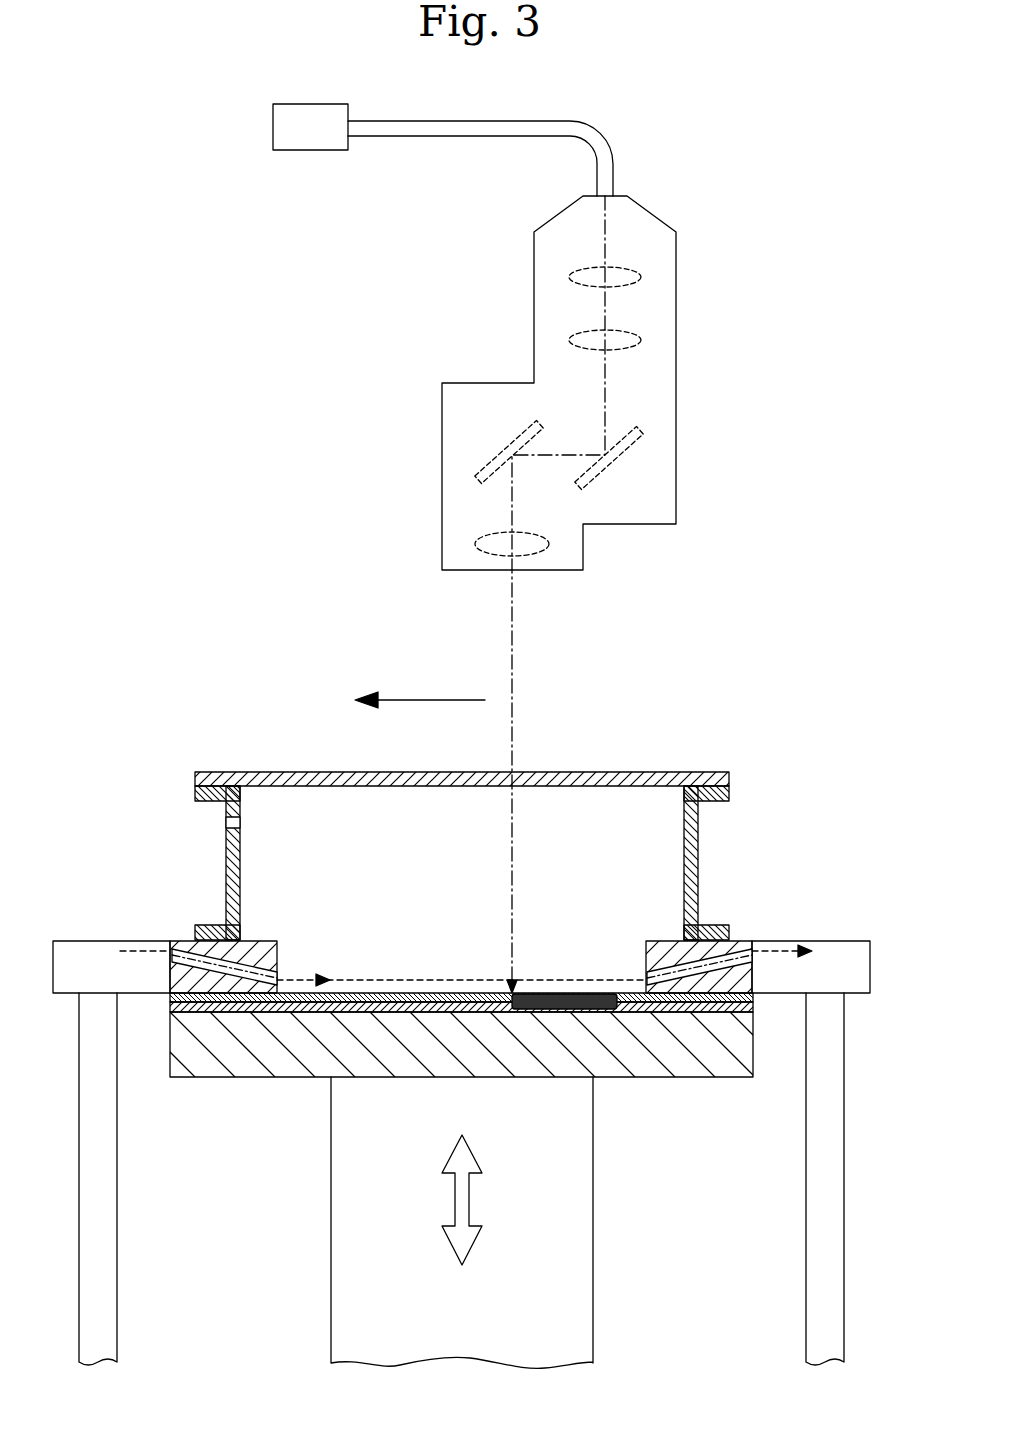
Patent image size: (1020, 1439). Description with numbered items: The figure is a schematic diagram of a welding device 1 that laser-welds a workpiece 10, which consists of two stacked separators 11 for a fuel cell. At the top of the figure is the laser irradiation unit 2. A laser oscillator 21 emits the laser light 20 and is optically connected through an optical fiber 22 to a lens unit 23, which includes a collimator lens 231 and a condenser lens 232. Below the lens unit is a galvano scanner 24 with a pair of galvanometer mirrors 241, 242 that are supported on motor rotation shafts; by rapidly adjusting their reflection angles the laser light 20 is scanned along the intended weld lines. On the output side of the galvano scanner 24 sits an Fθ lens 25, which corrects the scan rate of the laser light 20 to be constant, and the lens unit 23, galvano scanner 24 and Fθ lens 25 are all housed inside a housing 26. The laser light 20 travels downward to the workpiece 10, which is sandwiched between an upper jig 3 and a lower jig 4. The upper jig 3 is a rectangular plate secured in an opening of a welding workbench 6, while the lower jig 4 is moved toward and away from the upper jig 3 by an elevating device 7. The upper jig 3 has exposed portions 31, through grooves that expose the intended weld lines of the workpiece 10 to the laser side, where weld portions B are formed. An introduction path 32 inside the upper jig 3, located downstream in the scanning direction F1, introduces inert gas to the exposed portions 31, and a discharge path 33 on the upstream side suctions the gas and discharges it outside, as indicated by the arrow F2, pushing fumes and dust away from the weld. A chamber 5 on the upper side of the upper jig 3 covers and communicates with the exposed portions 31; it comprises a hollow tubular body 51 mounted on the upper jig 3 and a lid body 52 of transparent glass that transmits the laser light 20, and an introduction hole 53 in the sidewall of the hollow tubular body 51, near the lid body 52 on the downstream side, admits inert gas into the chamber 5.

The welding device 1 is at (783, 158).
The laser irradiation unit 2 is at (250, 103).
The laser light 20 is at (514, 659).
The laser oscillator 21 is at (300, 152).
The optical fiber 22 is at (603, 150).
The lens unit 23 is at (752, 258).
The collimator lens 231 is at (640, 277).
The condenser lens 232 is at (640, 340).
The galvano scanner 24 is at (556, 450).
The galvanometer mirror 241 is at (520, 430).
The galvanometer mirror 242 is at (621, 457).
The Fθ lens 25 is at (497, 540).
The housing 26 is at (534, 297).
The upper jig 3 is at (740, 941).
The exposed portions 31 is at (643, 957).
The introduction path 32 is at (200, 950).
The discharge path 33 is at (720, 955).
The lower jig 4 is at (663, 1077).
The chamber 5 is at (698, 857).
The hollow tubular body 51 is at (226, 868).
The lid body 52 is at (290, 772).
The introduction hole 53 is at (226, 823).
The welding workbench 6 is at (845, 948).
The elevating device 7 is at (595, 1252).
The workpiece 10 is at (325, 1010).
The separator 11 is at (243, 1000).
The weld portions B is at (562, 993).
The scanning direction F1 is at (409, 700).
The inert gas flow arrow F2 is at (265, 957).